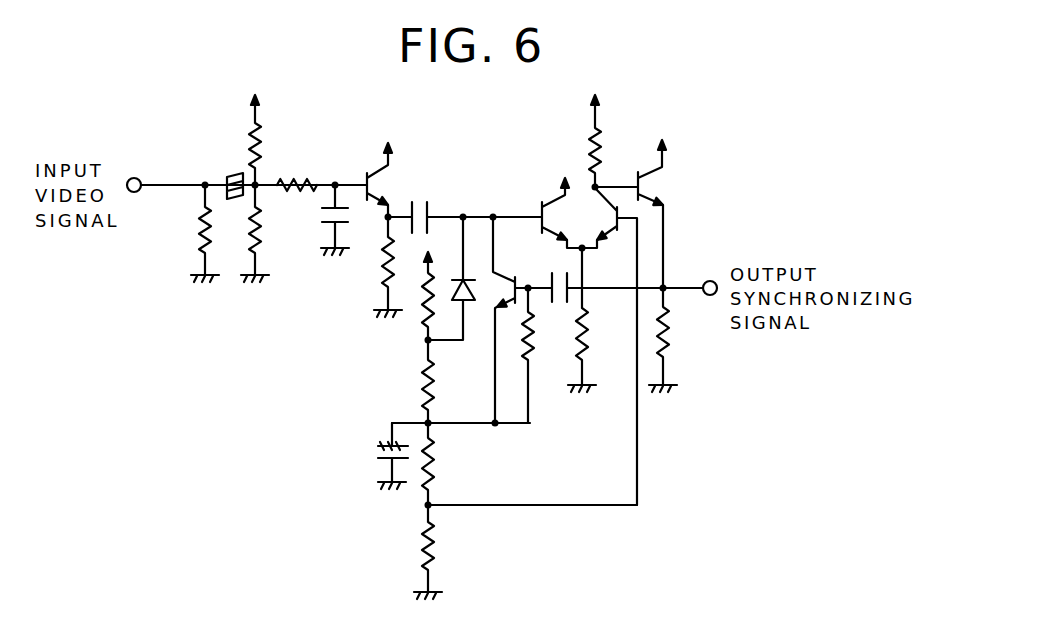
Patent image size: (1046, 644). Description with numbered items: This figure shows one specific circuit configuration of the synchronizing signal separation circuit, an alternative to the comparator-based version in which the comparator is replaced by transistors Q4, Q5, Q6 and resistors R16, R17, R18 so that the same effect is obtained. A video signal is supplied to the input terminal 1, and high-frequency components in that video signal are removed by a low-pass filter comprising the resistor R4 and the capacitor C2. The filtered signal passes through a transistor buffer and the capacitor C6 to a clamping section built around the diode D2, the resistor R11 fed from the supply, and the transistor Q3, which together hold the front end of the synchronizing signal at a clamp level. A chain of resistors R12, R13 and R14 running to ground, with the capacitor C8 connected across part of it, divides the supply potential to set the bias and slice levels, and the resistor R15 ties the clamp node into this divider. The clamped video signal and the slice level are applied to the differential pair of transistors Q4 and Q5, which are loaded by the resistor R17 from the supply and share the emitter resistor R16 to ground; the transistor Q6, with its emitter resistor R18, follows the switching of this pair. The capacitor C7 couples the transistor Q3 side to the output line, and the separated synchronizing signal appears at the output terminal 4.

The input terminal 1 is at (136, 178).
The output terminal 4 is at (710, 281).
The resistor R4 is at (297, 171).
The capacitor C2 is at (319, 220).
The capacitor C6 is at (407, 203).
The diode D2 is at (451, 262).
The transistor Q3 is at (519, 303).
The transistor Q4 is at (552, 202).
The transistor Q5 is at (609, 346).
The transistor Q6 is at (635, 200).
The resistor R17 is at (570, 141).
The capacitor C7 is at (616, 274).
The resistor R15 is at (549, 355).
The resistor R16 is at (600, 320).
The resistor R18 is at (683, 340).
The resistor R11 is at (407, 299).
The resistor R12 is at (406, 381).
The capacitor C8 is at (373, 456).
The resistor R13 is at (452, 464).
The resistor R14 is at (407, 552).